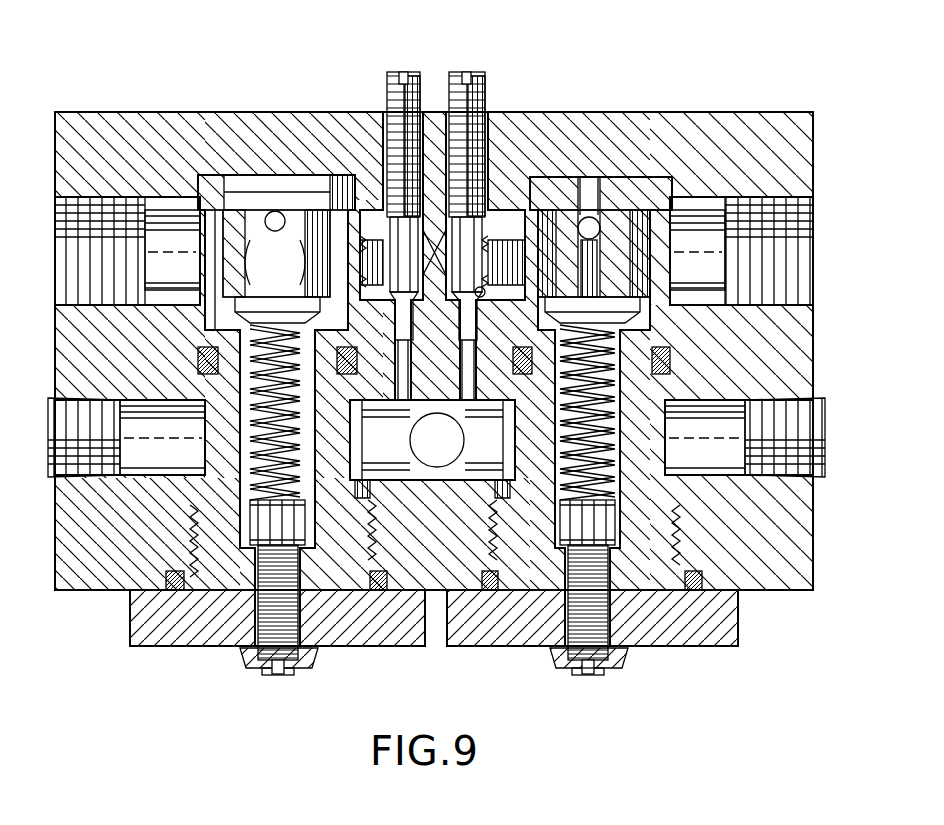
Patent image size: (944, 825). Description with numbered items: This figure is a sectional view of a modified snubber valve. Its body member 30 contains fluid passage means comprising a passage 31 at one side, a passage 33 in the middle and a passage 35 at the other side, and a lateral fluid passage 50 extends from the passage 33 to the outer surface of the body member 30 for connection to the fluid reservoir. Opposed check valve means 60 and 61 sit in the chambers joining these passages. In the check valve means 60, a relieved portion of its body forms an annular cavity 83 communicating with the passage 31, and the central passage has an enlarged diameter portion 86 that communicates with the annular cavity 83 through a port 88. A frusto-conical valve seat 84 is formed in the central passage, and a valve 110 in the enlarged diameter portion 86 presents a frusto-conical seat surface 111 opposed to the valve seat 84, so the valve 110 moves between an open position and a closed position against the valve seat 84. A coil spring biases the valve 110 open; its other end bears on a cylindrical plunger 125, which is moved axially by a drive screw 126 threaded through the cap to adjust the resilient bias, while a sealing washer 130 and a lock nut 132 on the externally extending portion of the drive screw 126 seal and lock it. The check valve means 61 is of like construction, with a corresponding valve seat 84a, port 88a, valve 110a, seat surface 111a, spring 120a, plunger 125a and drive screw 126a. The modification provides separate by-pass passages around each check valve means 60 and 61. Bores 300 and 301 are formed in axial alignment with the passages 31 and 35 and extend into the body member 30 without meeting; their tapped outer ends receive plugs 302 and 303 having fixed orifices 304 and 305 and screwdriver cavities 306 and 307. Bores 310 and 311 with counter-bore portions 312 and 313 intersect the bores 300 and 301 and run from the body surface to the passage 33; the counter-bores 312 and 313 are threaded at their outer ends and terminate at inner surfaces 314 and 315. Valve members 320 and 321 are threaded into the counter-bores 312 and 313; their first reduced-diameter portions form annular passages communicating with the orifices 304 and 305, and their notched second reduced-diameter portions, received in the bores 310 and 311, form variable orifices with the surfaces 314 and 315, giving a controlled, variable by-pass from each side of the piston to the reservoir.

The body member 30 is at (130, 112).
The passage 31 is at (165, 212).
The passage 33 is at (488, 472).
The passage 35 is at (690, 245).
The lateral fluid passage 50 is at (420, 455).
The check valve means 60 is at (117, 657).
The check valve means 61 is at (751, 639).
The annular cavity 83 is at (208, 240).
The frusto-conical valve seat 84 is at (302, 338).
The spring 84a is at (620, 400).
The enlarged diameter portion 86 is at (230, 215).
The port 88 is at (245, 250).
The valve cartridge 88a is at (640, 262).
The valve 110 is at (240, 306).
The valve seat 110a is at (648, 318).
The frusto-conical seat surface 111 is at (225, 345).
The seal ring 111a is at (656, 366).
The port fitting 120a is at (665, 486).
The cylindrical plunger 125 is at (258, 525).
The spring retainer nut 125a is at (620, 560).
The drive screw 126 is at (270, 680).
The adjusting screw 126a is at (626, 663).
The sealing washer 130 is at (240, 655).
The lock nut 132 is at (250, 672).
The bore 300 is at (395, 298).
The bore 301 is at (525, 300).
The plug 302 is at (366, 232).
The plug 303 is at (508, 242).
The fixed orifice 304 is at (318, 268).
The fixed orifice 305 is at (470, 300).
The cavity 306 is at (312, 240).
The cavity 307 is at (580, 228).
The bore 310 is at (409, 368).
The bore 311 is at (580, 290).
The counter-bore portion 312 is at (398, 216).
The counter-bore portion 313 is at (478, 220).
The inner surface 314 is at (412, 332).
The inner surface 315 is at (413, 300).
The valve member 320 is at (382, 96).
The valve member 321 is at (470, 100).